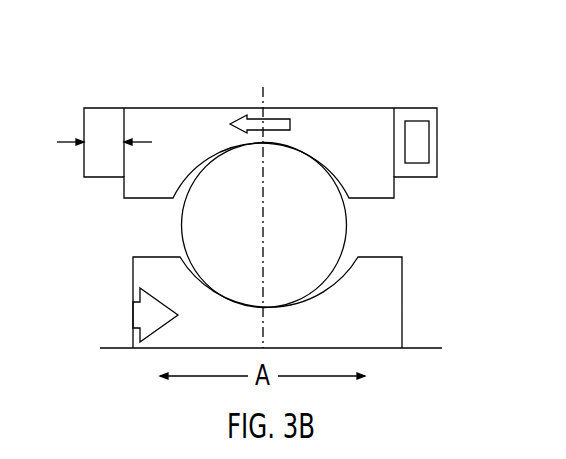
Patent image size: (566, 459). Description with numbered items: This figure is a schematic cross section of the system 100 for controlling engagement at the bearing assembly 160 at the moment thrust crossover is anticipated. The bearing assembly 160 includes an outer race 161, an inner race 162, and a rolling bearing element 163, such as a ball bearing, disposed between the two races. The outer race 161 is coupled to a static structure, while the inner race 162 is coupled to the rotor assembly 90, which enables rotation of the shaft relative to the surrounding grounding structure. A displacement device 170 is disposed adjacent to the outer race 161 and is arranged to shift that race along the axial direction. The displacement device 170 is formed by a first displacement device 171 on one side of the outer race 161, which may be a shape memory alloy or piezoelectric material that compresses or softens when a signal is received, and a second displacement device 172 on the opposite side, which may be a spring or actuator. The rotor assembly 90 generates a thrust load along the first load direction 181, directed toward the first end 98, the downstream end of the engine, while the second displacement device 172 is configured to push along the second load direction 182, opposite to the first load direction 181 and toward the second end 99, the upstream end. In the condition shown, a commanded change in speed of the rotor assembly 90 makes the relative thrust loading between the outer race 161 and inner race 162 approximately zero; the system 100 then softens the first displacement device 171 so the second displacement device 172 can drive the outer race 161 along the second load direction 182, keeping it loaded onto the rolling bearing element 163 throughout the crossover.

The bearing assembly 160 is at (280, 185).
The outer race 161 is at (380, 182).
The inner race 162 is at (381, 285).
The rolling bearing element 163 is at (252, 237).
The displacement device 170 is at (88, 181).
The first displacement device 171 is at (85, 127).
The second displacement device 172 is at (437, 152).
The first load direction 181 is at (143, 313).
The second load direction 182 is at (258, 118).
The system 100 is at (140, 238).
The first end 98 is at (458, 240).
The second end 99 is at (68, 240).
The rotor assembly 90 is at (420, 392).